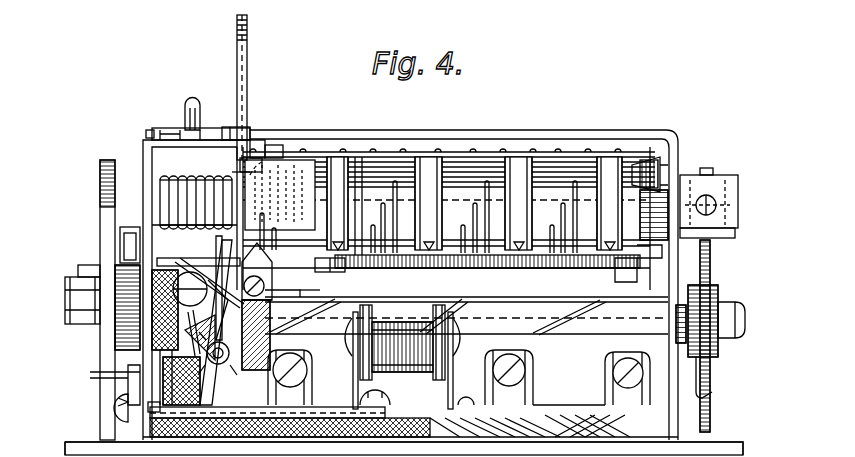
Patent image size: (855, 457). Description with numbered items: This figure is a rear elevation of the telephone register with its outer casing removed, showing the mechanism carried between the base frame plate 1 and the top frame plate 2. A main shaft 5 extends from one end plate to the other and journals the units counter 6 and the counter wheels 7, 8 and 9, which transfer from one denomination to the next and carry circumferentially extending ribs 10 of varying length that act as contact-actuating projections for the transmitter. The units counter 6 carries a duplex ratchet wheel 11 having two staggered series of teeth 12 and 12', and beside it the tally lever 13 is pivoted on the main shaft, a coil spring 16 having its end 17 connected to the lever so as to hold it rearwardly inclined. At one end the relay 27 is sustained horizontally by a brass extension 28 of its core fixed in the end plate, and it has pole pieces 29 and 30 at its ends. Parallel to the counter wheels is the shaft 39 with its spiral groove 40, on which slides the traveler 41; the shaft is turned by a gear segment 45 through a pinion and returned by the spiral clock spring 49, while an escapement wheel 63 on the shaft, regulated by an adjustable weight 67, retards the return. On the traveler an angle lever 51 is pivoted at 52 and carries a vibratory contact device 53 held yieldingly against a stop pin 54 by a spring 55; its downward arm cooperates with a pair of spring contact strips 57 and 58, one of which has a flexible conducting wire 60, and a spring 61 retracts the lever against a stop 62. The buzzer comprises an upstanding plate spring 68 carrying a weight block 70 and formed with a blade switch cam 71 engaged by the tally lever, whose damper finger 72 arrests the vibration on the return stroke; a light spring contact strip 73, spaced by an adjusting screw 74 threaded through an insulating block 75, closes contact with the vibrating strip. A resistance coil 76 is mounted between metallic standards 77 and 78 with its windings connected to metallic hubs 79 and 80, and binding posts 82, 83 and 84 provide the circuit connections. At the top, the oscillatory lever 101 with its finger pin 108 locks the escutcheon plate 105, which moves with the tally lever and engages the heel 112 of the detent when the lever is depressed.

The base frame plate 1 is at (716, 452).
The top frame plate 2 is at (66, 310).
The main shaft 5 is at (668, 183).
The units counter 6 is at (300, 152).
The counter wheel 7 is at (380, 152).
The counter wheel 8 is at (470, 152).
The counter wheel 9 is at (565, 152).
The ribs 10 is at (280, 240).
The duplex ratchet wheel 11 is at (232, 172).
The teeth 12 is at (262, 124).
The teeth 12' is at (271, 230).
The tally lever 13 is at (237, 80).
The coil spring 16 is at (195, 180).
The end of coil spring 17 is at (240, 162).
The relay 27 is at (553, 268).
The brass extension 28 is at (640, 262).
The pole piece 29 is at (656, 270).
The pole piece 30 is at (332, 262).
The shaft 39 is at (569, 391).
The spiral groove 40 is at (548, 334).
The traveler 41 is at (316, 287).
The gear segment 45 is at (100, 202).
The spiral clock spring 49 is at (134, 228).
The angle lever 51 is at (200, 272).
The pivot 52 is at (178, 276).
The vibratory contact device 53 is at (288, 300).
The stop pin 54 is at (257, 324).
The spring 55 is at (222, 272).
The spring contact strip 57 is at (118, 398).
The spring contact strip 58 is at (150, 410).
The flexible conducting wire 60 is at (715, 178).
The spring 61 is at (180, 312).
The stop 62 is at (206, 345).
The escapement wheel 63 is at (712, 397).
The adjustable weight 67 is at (725, 236).
The plate spring 68 is at (209, 377).
The weight block 70 is at (315, 185).
The blade switch cam 71 is at (214, 284).
The damper finger 72 is at (198, 247).
The spring contact strip 73 is at (193, 294).
The adjusting screw 74 is at (135, 366).
The insulating block 75 is at (205, 348).
The resistance coil 76 is at (420, 366).
The metallic standard 77 is at (353, 382).
The metallic standard 78 is at (453, 382).
The metallic hub 79 is at (348, 345).
The metallic hub 80 is at (462, 345).
The binding post 82 is at (506, 405).
The binding post 83 is at (290, 377).
The binding post 84 is at (616, 405).
The oscillatory lever 101 is at (170, 116).
The escutcheon plate 105 is at (230, 119).
The finger pin 108 is at (187, 104).
The heel of detent 112 is at (152, 134).